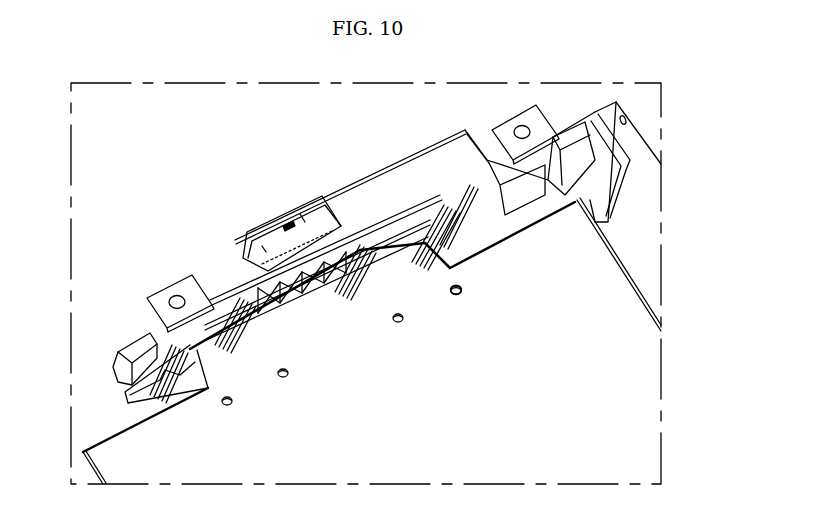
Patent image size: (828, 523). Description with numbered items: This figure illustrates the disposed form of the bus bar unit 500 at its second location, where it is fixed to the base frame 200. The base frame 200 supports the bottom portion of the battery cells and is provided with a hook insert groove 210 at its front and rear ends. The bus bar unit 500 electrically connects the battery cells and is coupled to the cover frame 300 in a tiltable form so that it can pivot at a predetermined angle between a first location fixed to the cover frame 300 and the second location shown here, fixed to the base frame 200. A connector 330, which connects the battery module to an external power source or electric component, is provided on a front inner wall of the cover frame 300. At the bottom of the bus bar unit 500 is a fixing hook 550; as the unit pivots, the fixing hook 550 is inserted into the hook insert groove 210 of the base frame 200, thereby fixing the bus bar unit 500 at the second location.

The base frame 200 is at (638, 333).
The hook insert groove 210 is at (462, 289).
The cover frame 300 is at (640, 197).
The connector 330 is at (312, 222).
The bus bar unit 500 is at (91, 391).
The fixing hook 550 is at (454, 289).